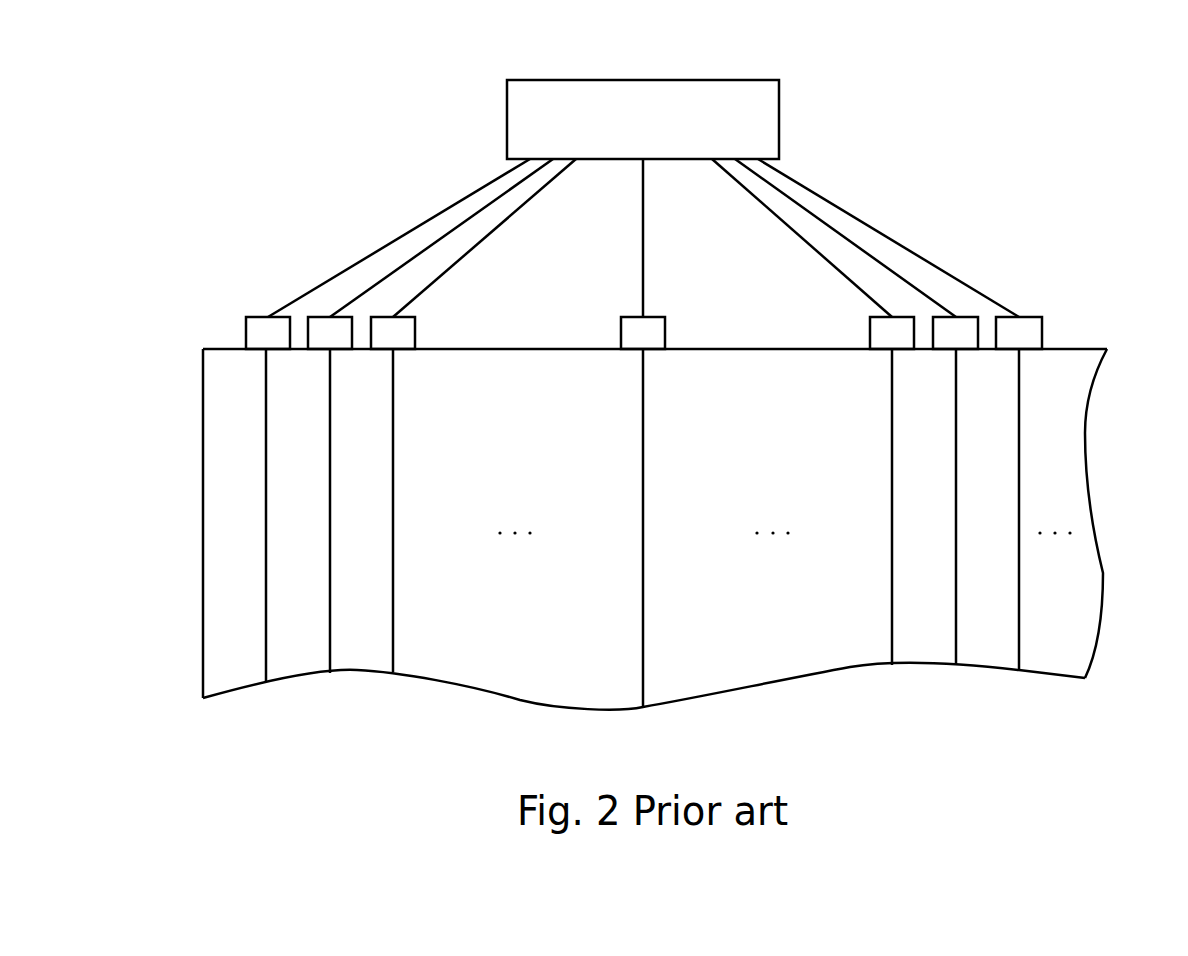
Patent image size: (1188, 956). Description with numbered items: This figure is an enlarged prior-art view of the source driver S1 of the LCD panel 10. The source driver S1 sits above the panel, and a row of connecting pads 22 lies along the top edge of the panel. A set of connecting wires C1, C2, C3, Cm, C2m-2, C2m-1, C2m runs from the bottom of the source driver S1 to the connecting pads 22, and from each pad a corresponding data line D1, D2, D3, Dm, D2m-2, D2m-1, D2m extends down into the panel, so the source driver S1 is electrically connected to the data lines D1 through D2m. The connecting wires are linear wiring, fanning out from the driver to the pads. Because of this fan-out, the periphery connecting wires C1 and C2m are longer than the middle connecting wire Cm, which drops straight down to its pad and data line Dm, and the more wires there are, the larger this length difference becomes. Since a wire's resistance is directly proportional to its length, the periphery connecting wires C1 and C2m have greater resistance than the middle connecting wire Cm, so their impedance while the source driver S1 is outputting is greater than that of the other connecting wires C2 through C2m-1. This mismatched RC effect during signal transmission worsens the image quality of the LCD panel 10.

The LCD panel 10 is at (983, 122).
The connecting pads 22 is at (1030, 334).
The source driver S1 is at (643, 119).
The periphery connecting wire C1 is at (500, 177).
The connecting wire C2 is at (481, 210).
The connecting wire C3 is at (459, 260).
The middle connecting wire Cm is at (643, 237).
The connecting wire C2m-2 is at (830, 260).
The connecting wire C2m-1 is at (812, 212).
The periphery connecting wire C2m is at (785, 175).
The data line D1 is at (266, 662).
The data line D2 is at (330, 660).
The data line D3 is at (393, 660).
The data line Dm is at (643, 660).
The data line D2m-2 is at (892, 652).
The data line D2m-1 is at (956, 632).
The data line D2m is at (1019, 610).